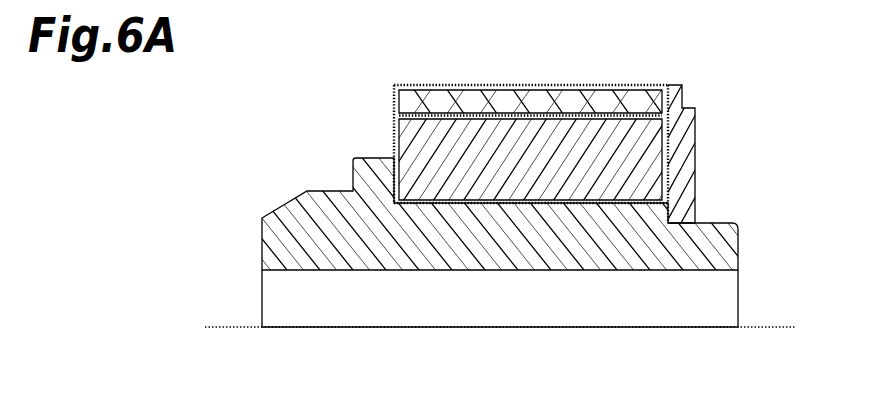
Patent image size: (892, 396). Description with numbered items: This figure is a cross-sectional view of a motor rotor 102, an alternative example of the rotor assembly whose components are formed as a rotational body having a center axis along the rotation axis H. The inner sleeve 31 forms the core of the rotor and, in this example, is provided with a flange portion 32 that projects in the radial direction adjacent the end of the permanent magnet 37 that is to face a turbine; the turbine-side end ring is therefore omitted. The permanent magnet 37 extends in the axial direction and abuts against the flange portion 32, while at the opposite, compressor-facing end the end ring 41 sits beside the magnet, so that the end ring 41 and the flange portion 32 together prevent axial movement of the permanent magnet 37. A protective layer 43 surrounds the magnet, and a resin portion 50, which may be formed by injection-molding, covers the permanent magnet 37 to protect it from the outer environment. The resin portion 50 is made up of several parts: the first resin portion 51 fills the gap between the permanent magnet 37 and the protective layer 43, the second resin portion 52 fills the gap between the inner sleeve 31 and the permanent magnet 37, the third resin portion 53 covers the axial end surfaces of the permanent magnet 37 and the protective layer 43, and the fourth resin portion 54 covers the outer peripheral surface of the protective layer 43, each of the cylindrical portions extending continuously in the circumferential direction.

The motor rotor 102 is at (499, 201).
The inner sleeve 31 is at (592, 255).
The flange portion 32 is at (374, 163).
The permanent magnet 37 is at (623, 130).
The end ring 41 is at (687, 175).
The protective layer 43 is at (471, 104).
The resin portion 50 is at (532, 204).
The first resin portion 51 is at (549, 116).
The second resin portion 52 is at (518, 204).
The third resin portion 53 is at (392, 137).
The fourth resin portion 54 is at (433, 84).
The rotation axis H is at (772, 325).